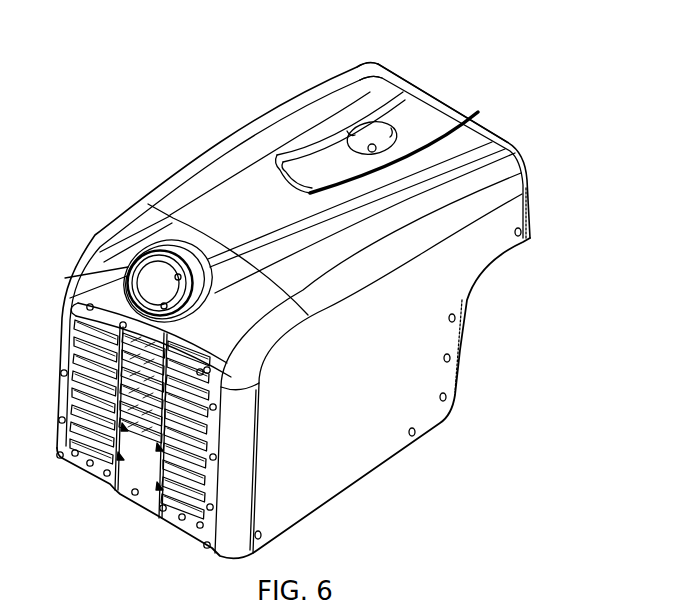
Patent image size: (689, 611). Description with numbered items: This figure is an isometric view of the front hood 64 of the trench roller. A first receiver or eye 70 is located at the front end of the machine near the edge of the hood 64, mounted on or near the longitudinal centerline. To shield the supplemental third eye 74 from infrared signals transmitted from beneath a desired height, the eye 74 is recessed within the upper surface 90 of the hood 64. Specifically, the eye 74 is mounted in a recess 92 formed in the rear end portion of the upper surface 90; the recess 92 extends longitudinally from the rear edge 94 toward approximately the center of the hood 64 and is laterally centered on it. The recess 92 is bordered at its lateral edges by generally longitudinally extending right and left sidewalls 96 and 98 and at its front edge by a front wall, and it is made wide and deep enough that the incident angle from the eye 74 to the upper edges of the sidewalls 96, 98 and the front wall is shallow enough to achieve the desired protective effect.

The front hood 64 is at (550, 340).
The first receiver 70 is at (153, 280).
The third eye 74 is at (367, 133).
The upper surface 90 is at (215, 210).
The recess 92 is at (387, 117).
The rear edge 94 is at (427, 93).
The right sidewall 96 is at (403, 82).
The left sidewall 98 is at (448, 126).